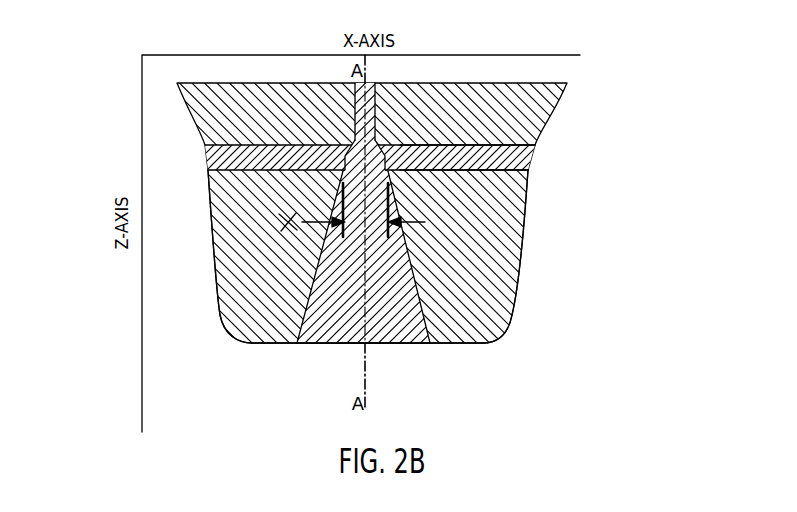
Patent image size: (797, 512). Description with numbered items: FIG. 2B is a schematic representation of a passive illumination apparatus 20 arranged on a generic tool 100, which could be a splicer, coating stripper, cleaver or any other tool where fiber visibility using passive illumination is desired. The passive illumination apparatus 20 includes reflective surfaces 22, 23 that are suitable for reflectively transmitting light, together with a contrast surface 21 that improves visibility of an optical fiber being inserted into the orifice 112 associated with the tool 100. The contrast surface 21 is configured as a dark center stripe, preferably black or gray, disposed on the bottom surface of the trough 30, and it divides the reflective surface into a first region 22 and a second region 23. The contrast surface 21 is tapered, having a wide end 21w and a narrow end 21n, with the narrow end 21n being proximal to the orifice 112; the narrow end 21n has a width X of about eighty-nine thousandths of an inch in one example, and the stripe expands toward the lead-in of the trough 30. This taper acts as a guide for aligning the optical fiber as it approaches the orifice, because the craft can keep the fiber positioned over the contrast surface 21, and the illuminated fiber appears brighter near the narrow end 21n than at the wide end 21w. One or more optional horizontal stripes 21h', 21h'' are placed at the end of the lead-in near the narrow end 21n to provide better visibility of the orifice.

The tool 100 is at (530, 98).
The orifice 112 is at (366, 85).
The contrast surface 21 is at (340, 311).
The horizontal stripe 21h' is at (292, 154).
The horizontal stripe 21h'' is at (566, 132).
The narrow end 21n is at (389, 172).
The wide end 21w is at (400, 325).
The reflective surface 22 is at (242, 292).
The reflective surface 23 is at (495, 233).
The passive illumination apparatus 20 is at (592, 281).
The trough 30 is at (382, 352).